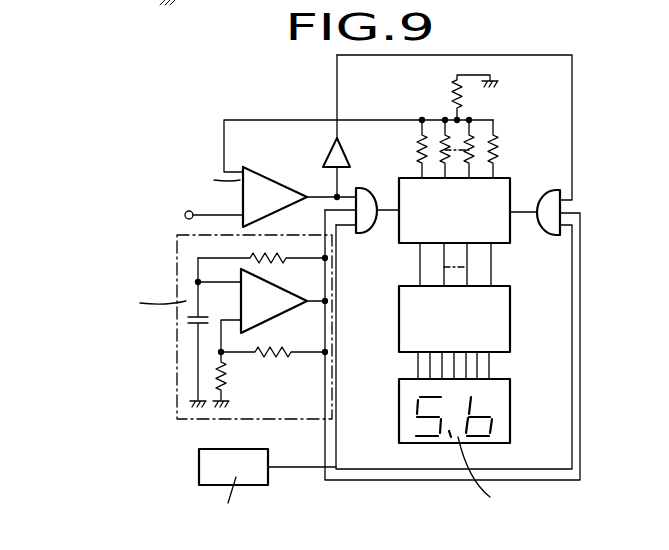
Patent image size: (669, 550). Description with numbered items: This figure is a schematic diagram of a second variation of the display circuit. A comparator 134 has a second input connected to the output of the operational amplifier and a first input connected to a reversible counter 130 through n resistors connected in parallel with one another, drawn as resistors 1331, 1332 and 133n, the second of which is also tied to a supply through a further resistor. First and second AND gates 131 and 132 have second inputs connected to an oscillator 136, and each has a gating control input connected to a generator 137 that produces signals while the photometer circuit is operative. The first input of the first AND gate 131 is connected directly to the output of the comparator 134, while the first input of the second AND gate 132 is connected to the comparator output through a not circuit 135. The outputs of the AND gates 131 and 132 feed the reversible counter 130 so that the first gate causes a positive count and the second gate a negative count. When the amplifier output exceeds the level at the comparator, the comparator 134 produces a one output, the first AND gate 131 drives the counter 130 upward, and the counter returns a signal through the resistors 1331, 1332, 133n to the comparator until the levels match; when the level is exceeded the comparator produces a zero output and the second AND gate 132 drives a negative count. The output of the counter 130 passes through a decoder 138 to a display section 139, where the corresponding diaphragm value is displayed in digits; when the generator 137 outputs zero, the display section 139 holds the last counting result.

The reversible counter 130 is at (500, 186).
The first AND gate 131 is at (364, 229).
The second AND gate 132 is at (549, 229).
The resistor 1331 is at (422, 153).
The resistor 1332 is at (445, 150).
The resistor 133n is at (496, 153).
The comparator 134 is at (270, 190).
The not circuit 135 is at (339, 140).
The oscillator 136 is at (187, 368).
The generator 137 is at (210, 465).
The decoder 138 is at (503, 320).
The display section 139 is at (509, 408).